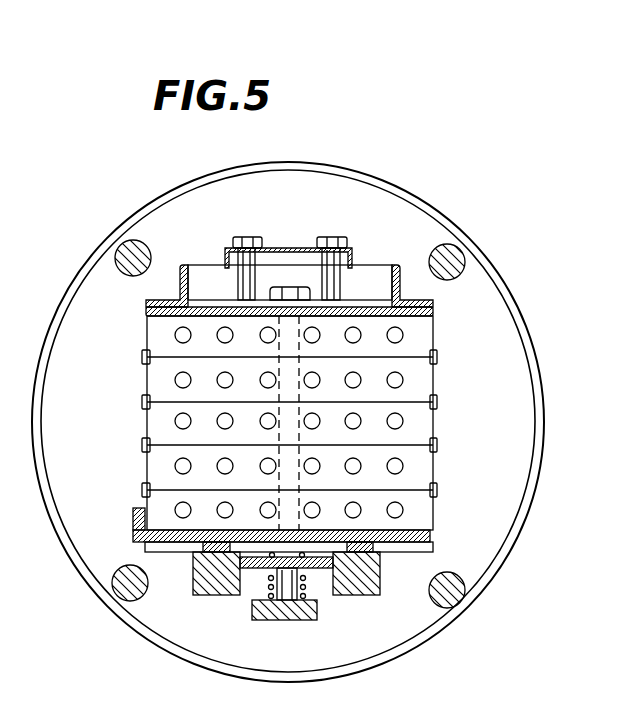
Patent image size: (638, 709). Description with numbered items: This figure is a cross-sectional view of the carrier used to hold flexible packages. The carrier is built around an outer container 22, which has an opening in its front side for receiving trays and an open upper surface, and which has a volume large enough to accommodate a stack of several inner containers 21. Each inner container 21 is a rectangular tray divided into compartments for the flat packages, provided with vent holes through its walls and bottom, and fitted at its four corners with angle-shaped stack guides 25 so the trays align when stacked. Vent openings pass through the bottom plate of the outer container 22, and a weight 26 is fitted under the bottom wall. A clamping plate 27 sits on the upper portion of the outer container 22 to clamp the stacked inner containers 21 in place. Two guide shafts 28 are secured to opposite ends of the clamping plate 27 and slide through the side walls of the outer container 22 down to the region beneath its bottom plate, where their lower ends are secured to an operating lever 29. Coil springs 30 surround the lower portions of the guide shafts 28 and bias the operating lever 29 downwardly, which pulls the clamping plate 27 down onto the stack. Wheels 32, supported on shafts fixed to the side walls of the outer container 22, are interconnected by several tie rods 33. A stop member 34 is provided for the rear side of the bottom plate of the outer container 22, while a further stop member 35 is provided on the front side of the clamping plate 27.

The inner container 21 is at (145, 458).
The outer container 22 is at (137, 535).
The stack guide 25 is at (143, 358).
The weight 26 is at (210, 592).
The clamping plate 27 is at (372, 307).
The guide shaft 28 is at (285, 595).
The operating lever 29 is at (297, 620).
The coil spring 30 is at (305, 587).
The wheel 32 is at (527, 423).
The tie rod 33 is at (457, 250).
The stop member 34 is at (135, 512).
The stop member 35 is at (437, 323).